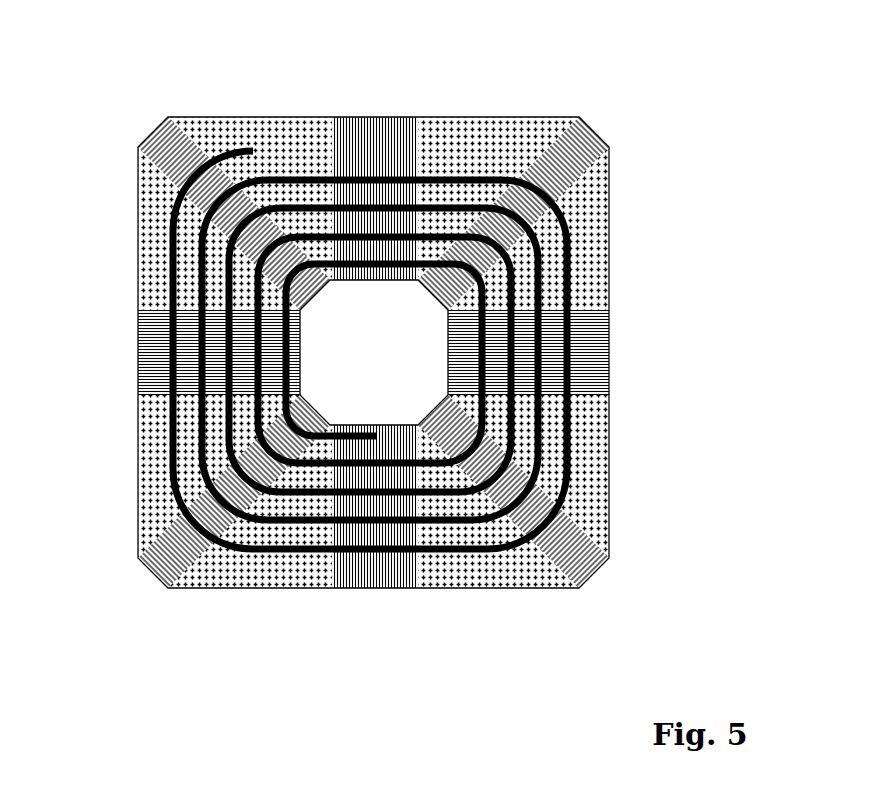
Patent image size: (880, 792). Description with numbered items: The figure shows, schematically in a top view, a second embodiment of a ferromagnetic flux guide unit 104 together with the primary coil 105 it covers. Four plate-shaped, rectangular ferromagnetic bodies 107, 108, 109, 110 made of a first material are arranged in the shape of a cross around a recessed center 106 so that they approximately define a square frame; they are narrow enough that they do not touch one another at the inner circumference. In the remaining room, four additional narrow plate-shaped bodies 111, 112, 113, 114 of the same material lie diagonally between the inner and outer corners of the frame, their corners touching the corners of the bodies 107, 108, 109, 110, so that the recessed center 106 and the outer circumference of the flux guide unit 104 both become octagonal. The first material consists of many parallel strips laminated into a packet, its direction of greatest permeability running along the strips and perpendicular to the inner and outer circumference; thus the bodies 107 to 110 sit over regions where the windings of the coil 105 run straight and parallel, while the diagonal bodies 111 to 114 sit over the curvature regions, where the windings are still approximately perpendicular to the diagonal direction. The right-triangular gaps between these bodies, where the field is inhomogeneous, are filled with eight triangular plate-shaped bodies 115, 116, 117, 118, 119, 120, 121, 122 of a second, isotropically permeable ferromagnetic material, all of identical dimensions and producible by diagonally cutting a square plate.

The ferromagnetic flux guide unit 104 is at (607, 103).
The primary coil 105 is at (466, 172).
The recessed center 106 is at (350, 362).
The plate-shaped ferromagnetic body 107 is at (371, 150).
The plate-shaped ferromagnetic body 108 is at (140, 334).
The plate-shaped ferromagnetic body 109 is at (373, 588).
The plate-shaped ferromagnetic body 110 is at (588, 366).
The diagonal plate-shaped ferromagnetic body 111 is at (600, 131).
The diagonal plate-shaped ferromagnetic body 112 is at (167, 117).
The diagonal plate-shaped ferromagnetic body 113 is at (152, 557).
The diagonal plate-shaped ferromagnetic body 114 is at (592, 588).
The triangular plate-shaped body 115 is at (264, 588).
The triangular plate-shaped body 116 is at (484, 588).
The triangular plate-shaped body 117 is at (590, 459).
The triangular plate-shaped body 118 is at (590, 258).
The triangular plate-shaped body 119 is at (522, 148).
The triangular plate-shaped body 120 is at (257, 150).
The triangular plate-shaped body 121 is at (138, 252).
The triangular plate-shaped body 122 is at (140, 461).